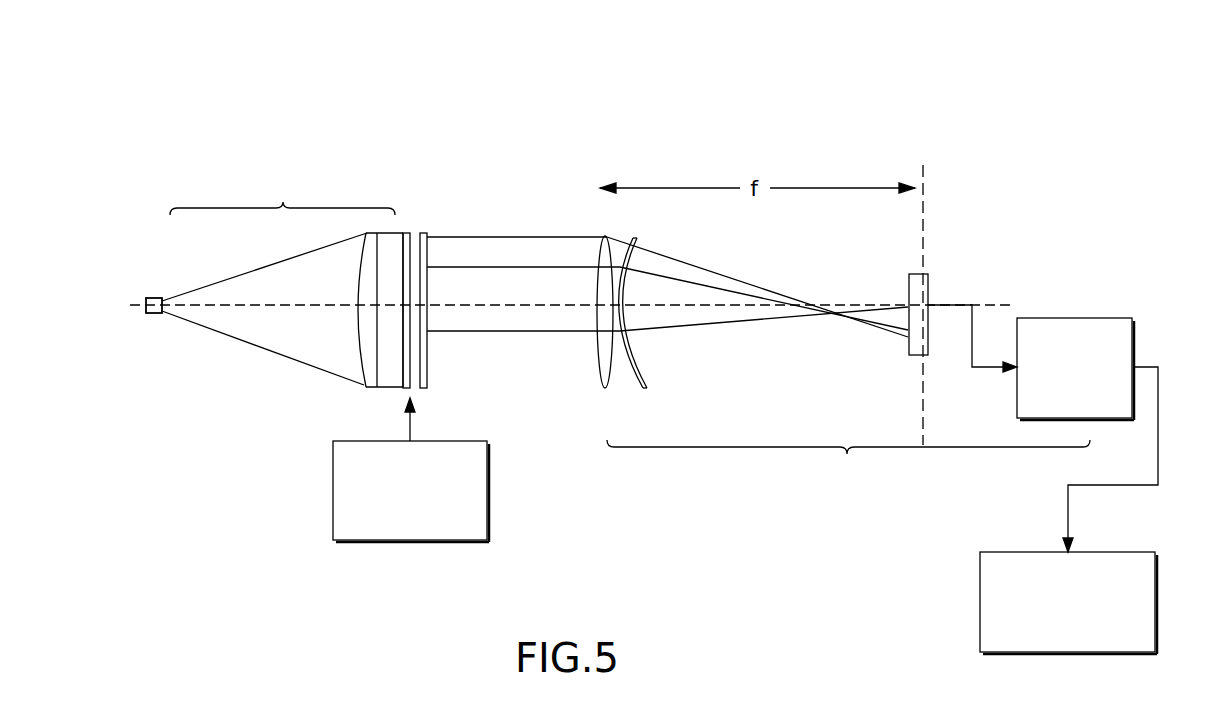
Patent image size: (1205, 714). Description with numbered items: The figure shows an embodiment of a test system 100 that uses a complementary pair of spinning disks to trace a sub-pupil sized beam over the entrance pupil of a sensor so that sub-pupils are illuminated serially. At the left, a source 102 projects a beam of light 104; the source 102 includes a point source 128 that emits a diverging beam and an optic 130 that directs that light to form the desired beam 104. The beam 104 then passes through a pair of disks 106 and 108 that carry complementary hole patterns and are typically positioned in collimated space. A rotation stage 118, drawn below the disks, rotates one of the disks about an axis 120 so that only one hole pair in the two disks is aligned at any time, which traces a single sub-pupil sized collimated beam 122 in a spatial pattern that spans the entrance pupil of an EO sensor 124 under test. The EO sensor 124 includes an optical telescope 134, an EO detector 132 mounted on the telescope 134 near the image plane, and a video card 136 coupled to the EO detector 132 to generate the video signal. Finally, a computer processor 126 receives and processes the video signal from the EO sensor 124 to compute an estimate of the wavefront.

The test system 100 is at (100, 118).
The source 102 is at (678, 232).
The beam of light 104 is at (378, 233).
The disk 106 is at (406, 233).
The disk 108 is at (430, 245).
The rotation stage 118 is at (333, 490).
The axis 120 is at (130, 300).
The sub-pupil sized collimated beam 122 is at (520, 268).
The EO sensor 124 is at (848, 465).
The computer processor 126 is at (980, 595).
The point source 128 is at (148, 314).
The optic 130 is at (363, 385).
The EO detector 132 is at (928, 292).
The optical telescope 134 is at (602, 240).
The video card 136 is at (1068, 318).